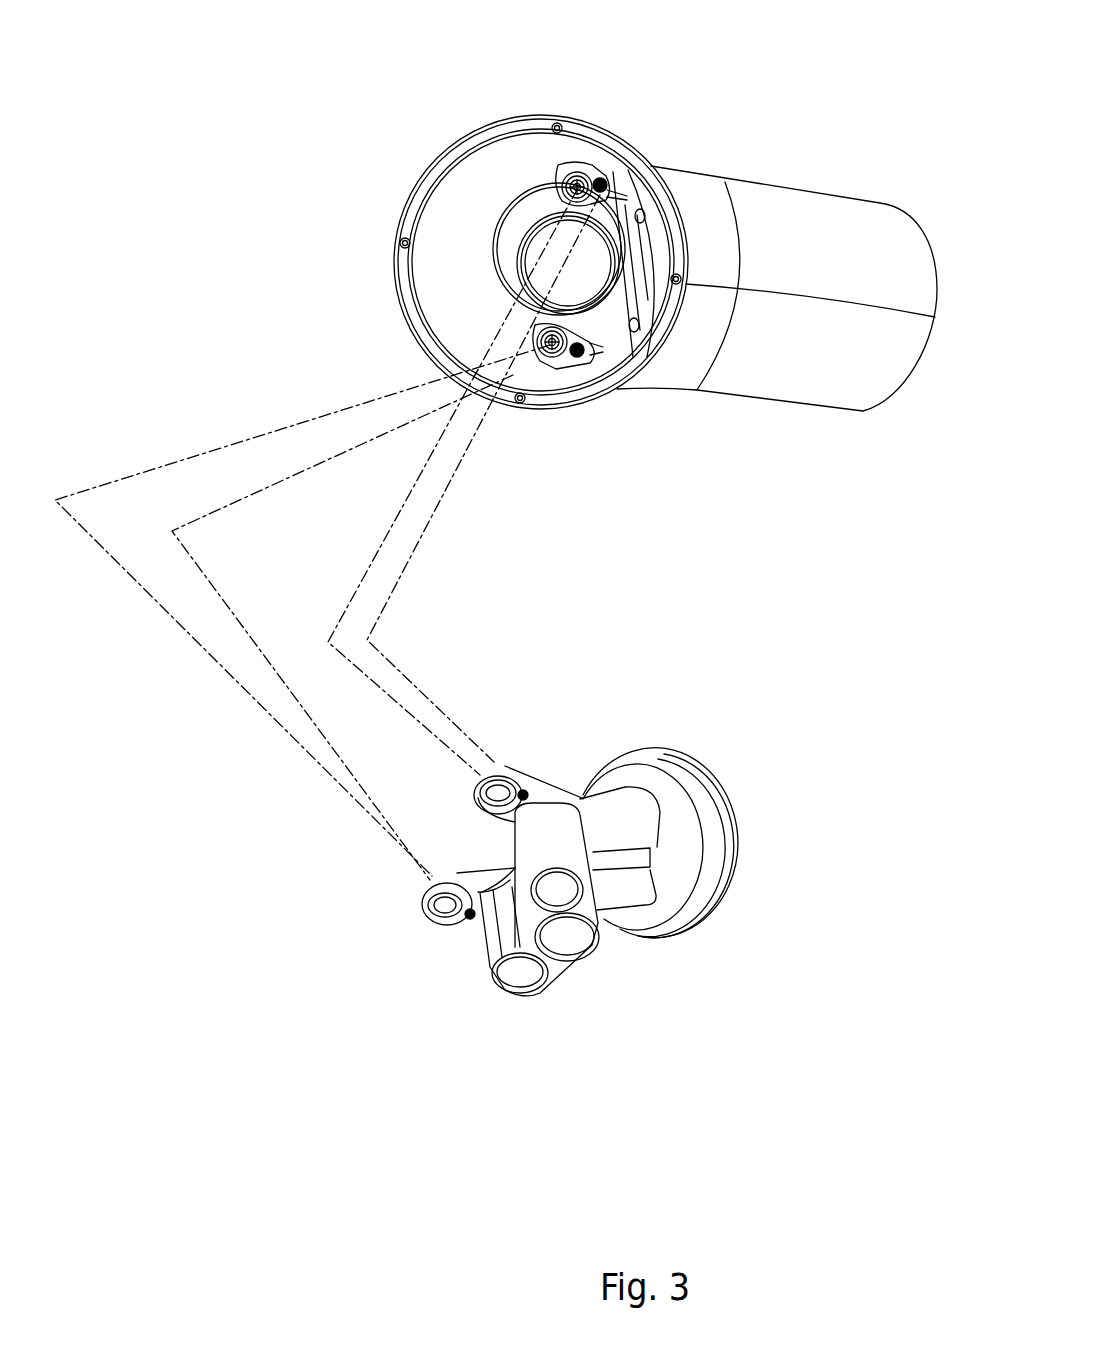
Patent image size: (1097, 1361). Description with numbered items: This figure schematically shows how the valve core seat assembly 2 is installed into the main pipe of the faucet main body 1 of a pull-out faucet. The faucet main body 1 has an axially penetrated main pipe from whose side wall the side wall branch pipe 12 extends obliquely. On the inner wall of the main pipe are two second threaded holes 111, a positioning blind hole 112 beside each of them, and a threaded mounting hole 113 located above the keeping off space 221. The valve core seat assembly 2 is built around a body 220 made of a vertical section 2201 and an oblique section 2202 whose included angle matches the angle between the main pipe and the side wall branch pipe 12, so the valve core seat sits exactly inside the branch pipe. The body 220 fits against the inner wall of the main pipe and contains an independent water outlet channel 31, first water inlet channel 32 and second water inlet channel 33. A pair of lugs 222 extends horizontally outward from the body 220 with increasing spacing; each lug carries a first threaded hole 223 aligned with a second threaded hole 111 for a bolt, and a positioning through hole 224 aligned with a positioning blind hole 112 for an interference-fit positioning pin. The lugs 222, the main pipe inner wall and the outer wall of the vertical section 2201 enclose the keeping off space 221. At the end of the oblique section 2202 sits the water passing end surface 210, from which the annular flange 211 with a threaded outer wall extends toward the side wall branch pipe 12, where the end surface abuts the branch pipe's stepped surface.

The faucet main body 1 is at (757, 160).
The side wall branch pipe 12 is at (790, 215).
The second threaded holes 111 is at (543, 336).
The positioning blind hole 112 is at (602, 197).
The threaded mounting hole 113 is at (580, 263).
The valve core seat assembly 2 is at (757, 885).
The water passing end surface 210 is at (722, 905).
The annular flange 211 is at (726, 807).
The body 220 is at (768, 973).
The vertical section 2201 is at (553, 847).
The oblique section 2202 is at (613, 820).
The keeping off space 221 is at (472, 847).
The lugs 222 is at (458, 880).
The first threaded hole 223 is at (500, 793).
The positioning through hole 224 is at (523, 795).
The water outlet channel 31 is at (557, 883).
The first water inlet channel 32 is at (567, 940).
The second water inlet channel 33 is at (522, 970).